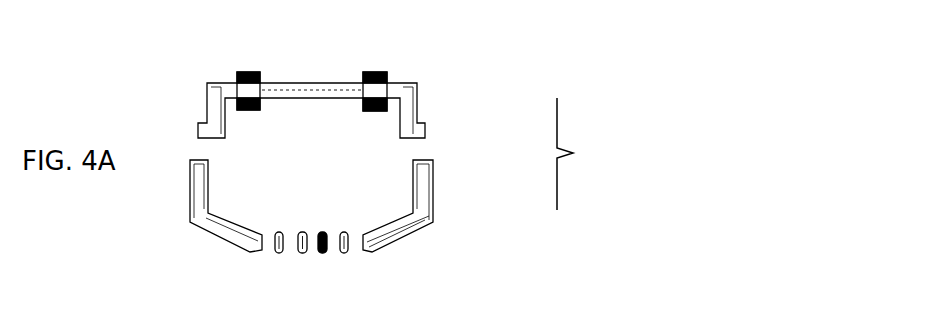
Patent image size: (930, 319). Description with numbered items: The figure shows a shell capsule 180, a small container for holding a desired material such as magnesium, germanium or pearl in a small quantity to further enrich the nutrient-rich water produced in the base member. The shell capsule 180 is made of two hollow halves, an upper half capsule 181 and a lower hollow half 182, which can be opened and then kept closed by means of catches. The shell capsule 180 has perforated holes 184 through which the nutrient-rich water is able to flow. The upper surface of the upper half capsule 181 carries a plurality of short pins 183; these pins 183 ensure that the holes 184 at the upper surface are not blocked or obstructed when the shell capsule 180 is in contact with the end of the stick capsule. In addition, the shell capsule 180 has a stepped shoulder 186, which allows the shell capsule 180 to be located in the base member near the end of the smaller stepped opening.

The shell capsule 180 is at (585, 154).
The upper half capsule 181 is at (410, 113).
The hollow half 182 is at (420, 198).
The short pins 183 is at (372, 69).
The perforated holes 184 is at (290, 87).
The stepped shoulder 186 is at (420, 215).